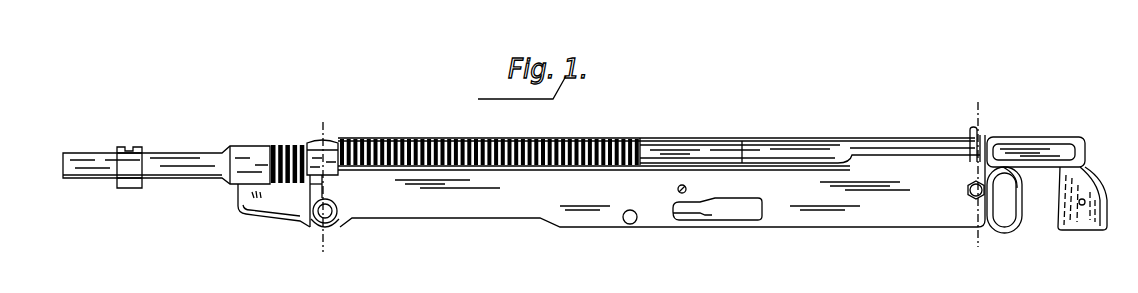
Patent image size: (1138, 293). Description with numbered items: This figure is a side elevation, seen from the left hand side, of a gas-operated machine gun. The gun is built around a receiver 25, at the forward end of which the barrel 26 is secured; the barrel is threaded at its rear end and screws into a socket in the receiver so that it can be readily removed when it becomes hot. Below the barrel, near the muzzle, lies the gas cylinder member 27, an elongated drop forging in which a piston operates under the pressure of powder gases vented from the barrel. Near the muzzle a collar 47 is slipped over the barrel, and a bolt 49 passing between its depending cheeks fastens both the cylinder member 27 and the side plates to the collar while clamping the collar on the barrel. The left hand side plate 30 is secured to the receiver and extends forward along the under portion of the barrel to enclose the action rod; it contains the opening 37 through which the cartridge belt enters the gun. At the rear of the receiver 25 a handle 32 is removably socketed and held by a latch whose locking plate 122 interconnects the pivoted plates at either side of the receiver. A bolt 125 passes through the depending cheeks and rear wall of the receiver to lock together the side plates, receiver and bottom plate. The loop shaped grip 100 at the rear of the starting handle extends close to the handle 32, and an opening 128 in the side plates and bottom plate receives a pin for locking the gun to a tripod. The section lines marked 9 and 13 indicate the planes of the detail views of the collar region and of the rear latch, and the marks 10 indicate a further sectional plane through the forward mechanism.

The section line 9- 9 is at (323, 185).
The receiver frame 10 is at (300, 198).
The section line 13- 13 is at (987, 105).
The receiver 25 is at (880, 136).
The barrel 26 is at (654, 140).
The gas cylinder member 27 is at (297, 218).
The left hand side plate 30 is at (833, 215).
The handle 32 is at (1047, 183).
The opening 37 is at (717, 205).
The collar 47 is at (333, 136).
The bolt 49 is at (330, 224).
The loop shaped grip 100 is at (1020, 226).
The locking plate 122 is at (972, 130).
The bolt 125 is at (971, 198).
The opening 128 is at (630, 225).